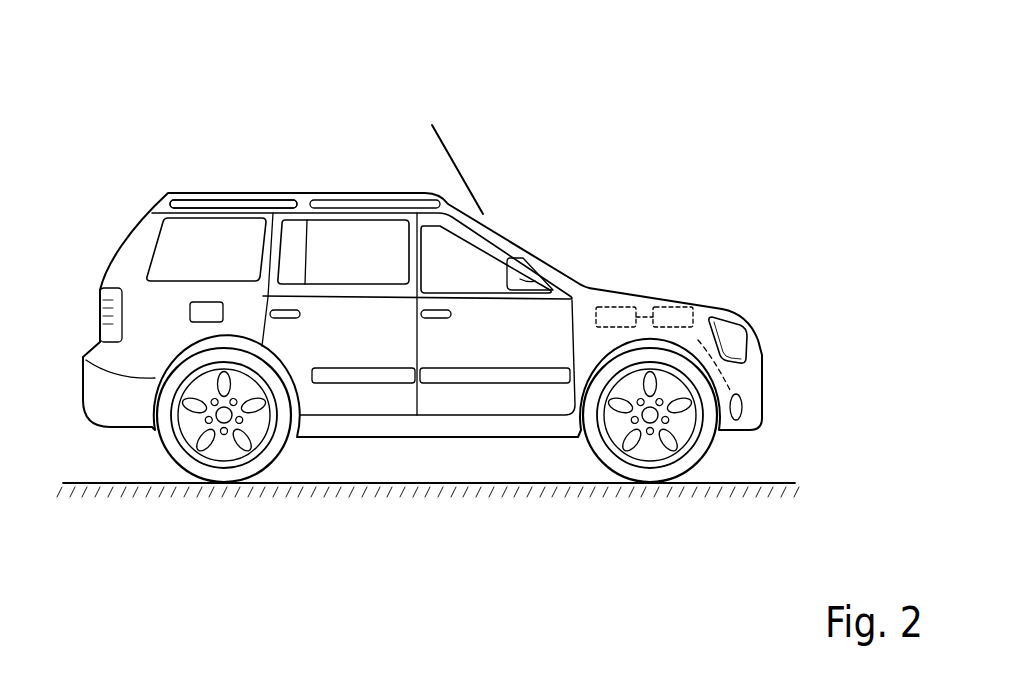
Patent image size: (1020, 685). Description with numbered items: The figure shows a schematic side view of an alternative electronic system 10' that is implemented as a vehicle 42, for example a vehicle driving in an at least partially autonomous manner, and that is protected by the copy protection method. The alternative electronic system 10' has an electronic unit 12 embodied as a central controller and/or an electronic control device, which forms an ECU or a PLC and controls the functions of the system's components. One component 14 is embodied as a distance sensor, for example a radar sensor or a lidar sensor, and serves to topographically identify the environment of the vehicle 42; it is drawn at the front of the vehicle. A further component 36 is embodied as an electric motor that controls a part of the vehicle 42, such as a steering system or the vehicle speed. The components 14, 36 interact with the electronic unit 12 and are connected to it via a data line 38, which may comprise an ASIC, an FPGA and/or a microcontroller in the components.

The alternative electronic system 10' is at (422, 249).
The vehicle 42 is at (297, 163).
The electronic unit 12 is at (618, 305).
The component 36 is at (676, 305).
The data line 38 is at (742, 372).
The component 14 is at (745, 400).